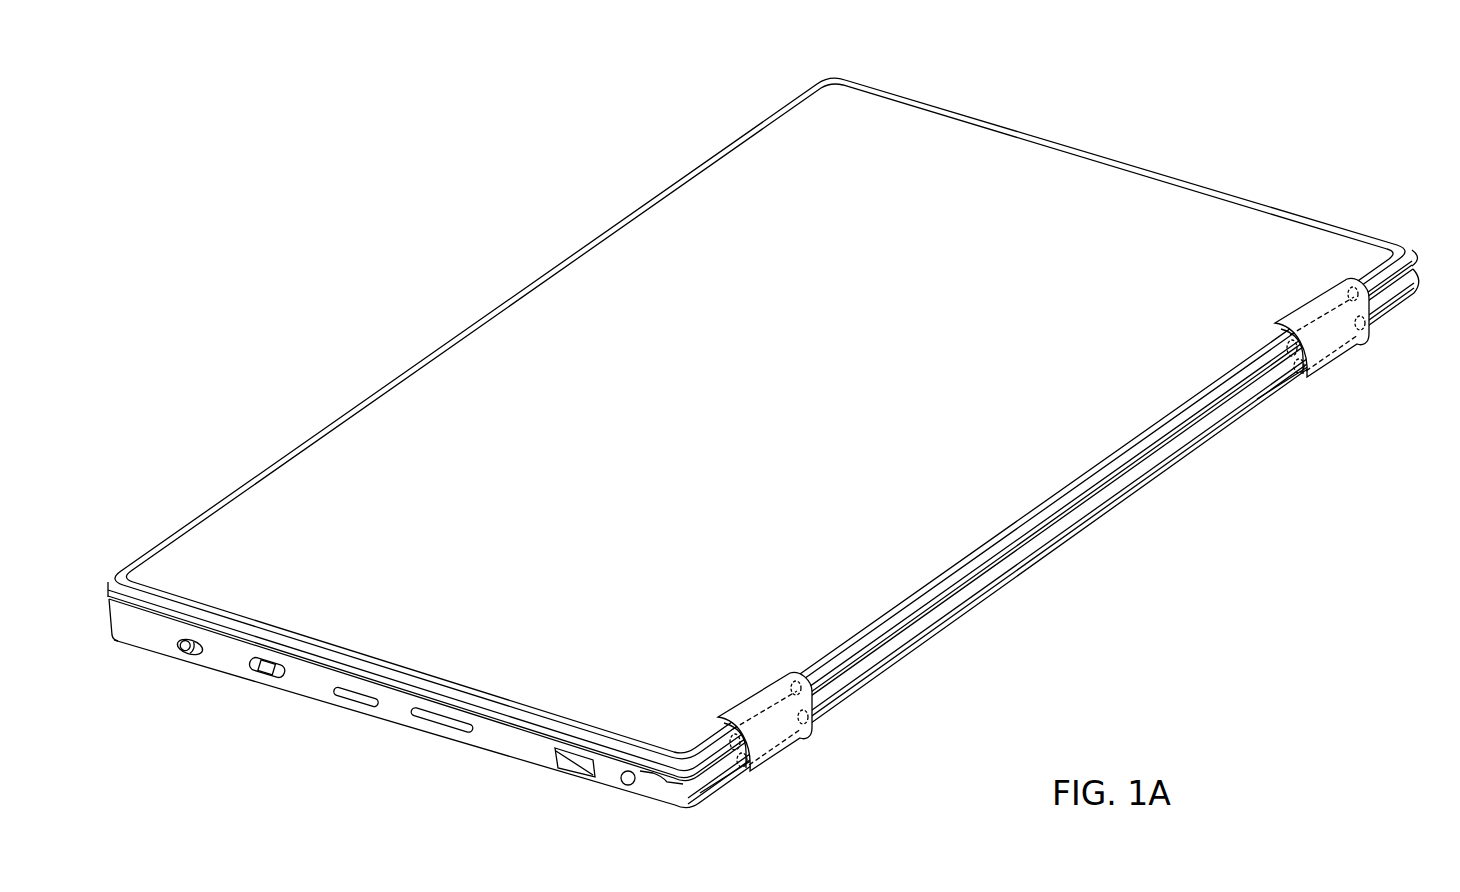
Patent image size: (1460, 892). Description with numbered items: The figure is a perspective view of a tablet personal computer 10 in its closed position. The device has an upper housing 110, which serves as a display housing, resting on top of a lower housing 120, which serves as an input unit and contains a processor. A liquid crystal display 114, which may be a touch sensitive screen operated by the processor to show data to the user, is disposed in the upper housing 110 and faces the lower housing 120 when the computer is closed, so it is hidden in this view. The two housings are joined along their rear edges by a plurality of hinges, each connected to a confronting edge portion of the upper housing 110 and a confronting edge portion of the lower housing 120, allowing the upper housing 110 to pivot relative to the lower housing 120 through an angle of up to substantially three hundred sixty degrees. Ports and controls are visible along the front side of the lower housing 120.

The tablet personal computer 10 is at (226, 155).
The upper housing 110 is at (1006, 141).
The liquid crystal display 114 is at (169, 617).
The lower housing 120 is at (225, 667).